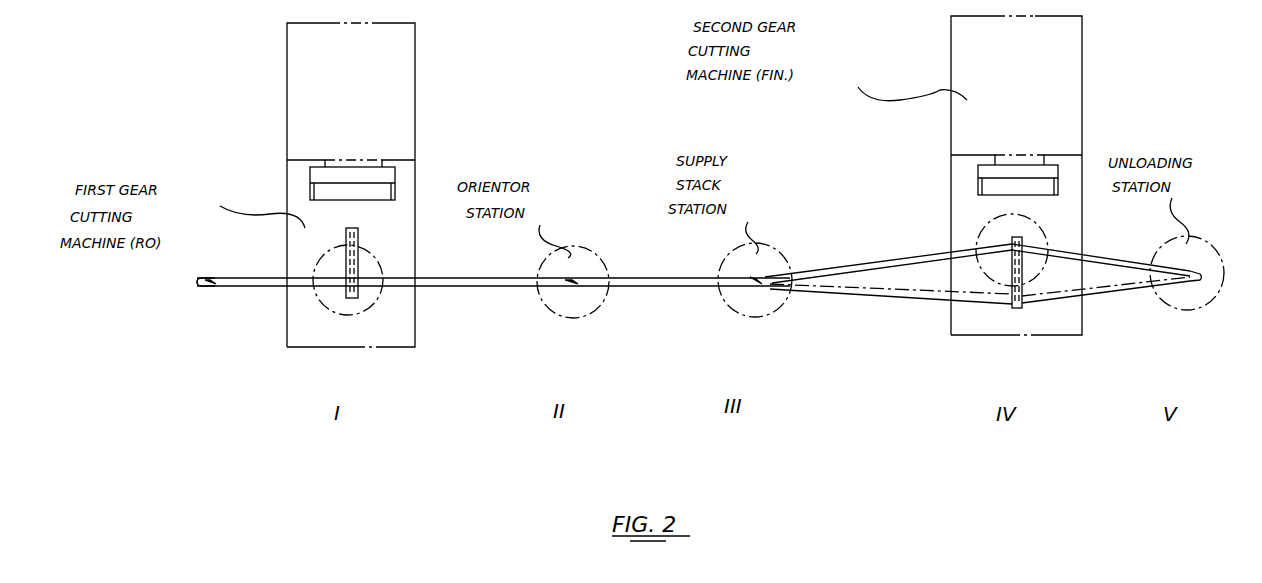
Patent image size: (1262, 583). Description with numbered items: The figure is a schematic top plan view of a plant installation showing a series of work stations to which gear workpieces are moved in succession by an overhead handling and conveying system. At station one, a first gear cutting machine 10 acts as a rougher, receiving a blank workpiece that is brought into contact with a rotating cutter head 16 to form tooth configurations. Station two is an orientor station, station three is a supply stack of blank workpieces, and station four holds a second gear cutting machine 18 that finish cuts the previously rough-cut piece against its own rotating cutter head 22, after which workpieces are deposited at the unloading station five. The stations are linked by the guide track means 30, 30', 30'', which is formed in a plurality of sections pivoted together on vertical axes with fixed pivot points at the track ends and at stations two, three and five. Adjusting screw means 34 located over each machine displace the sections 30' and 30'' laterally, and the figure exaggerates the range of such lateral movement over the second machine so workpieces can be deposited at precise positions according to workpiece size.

The first gear cutting machine 10 is at (403, 258).
The rotating cutter head 16 is at (396, 191).
The second gear cutting machine 18 is at (1062, 231).
The rotating cutter head 22 is at (1058, 182).
The guide track means 30 is at (493, 310).
The guide track means section 30' is at (833, 288).
The guide track means section 30'' is at (697, 297).
The adjusting screw means 34 is at (347, 300).